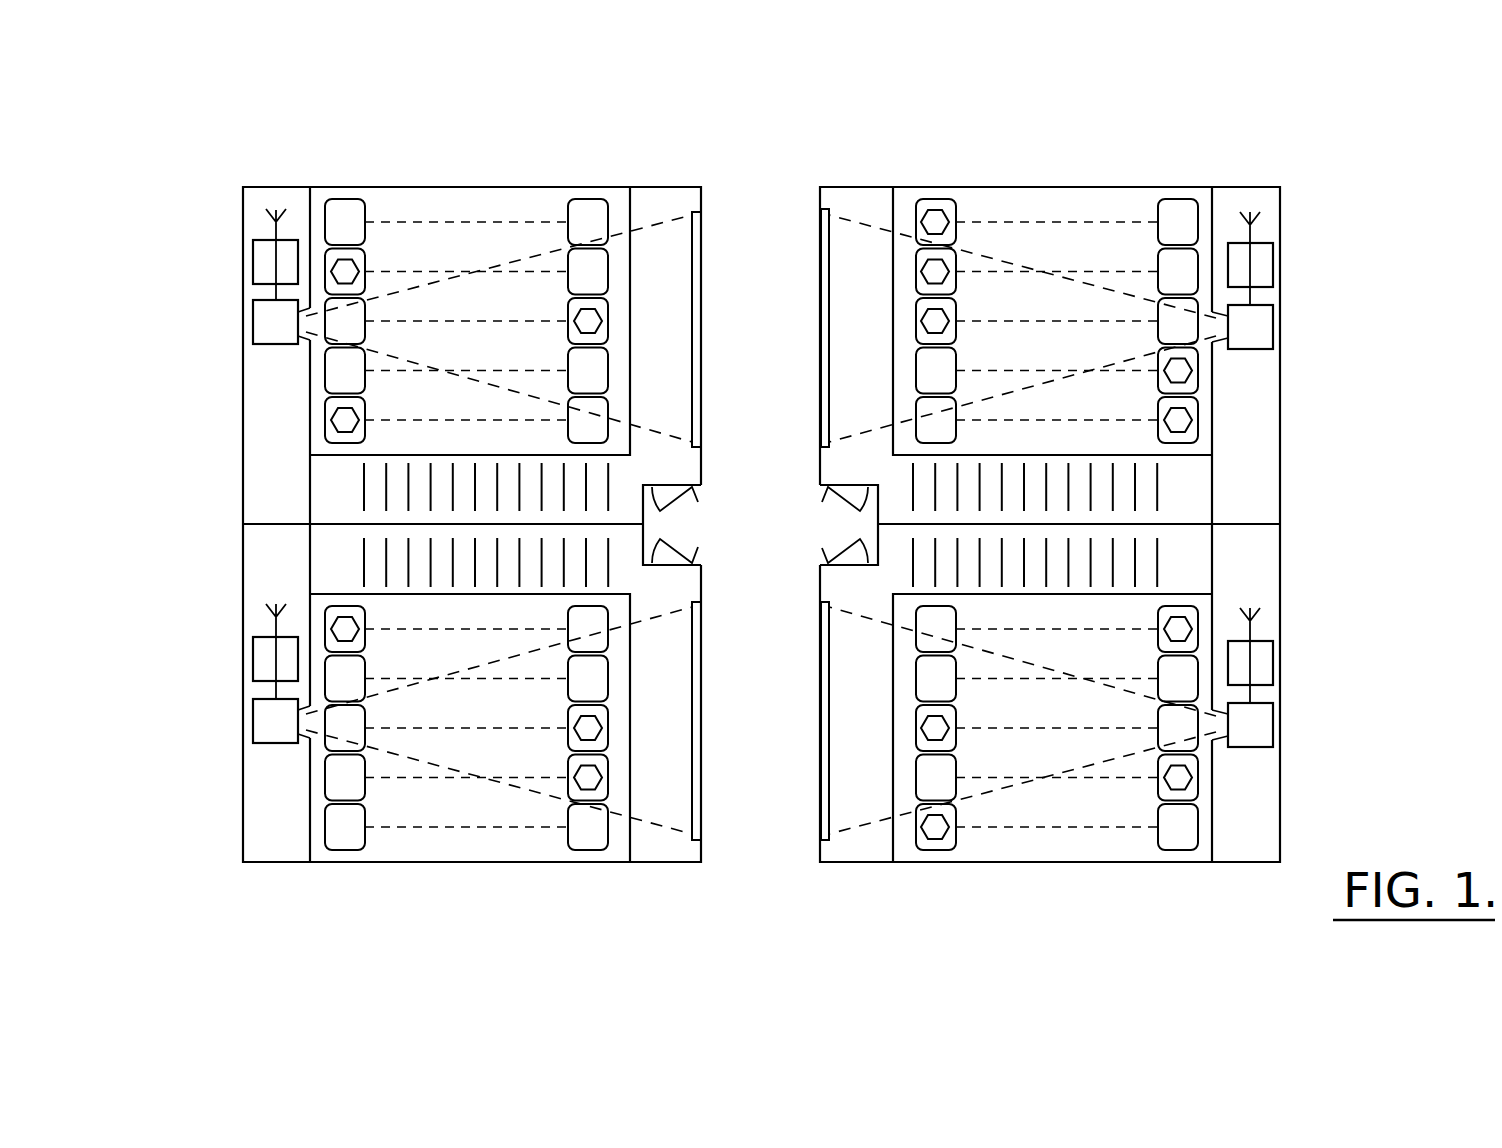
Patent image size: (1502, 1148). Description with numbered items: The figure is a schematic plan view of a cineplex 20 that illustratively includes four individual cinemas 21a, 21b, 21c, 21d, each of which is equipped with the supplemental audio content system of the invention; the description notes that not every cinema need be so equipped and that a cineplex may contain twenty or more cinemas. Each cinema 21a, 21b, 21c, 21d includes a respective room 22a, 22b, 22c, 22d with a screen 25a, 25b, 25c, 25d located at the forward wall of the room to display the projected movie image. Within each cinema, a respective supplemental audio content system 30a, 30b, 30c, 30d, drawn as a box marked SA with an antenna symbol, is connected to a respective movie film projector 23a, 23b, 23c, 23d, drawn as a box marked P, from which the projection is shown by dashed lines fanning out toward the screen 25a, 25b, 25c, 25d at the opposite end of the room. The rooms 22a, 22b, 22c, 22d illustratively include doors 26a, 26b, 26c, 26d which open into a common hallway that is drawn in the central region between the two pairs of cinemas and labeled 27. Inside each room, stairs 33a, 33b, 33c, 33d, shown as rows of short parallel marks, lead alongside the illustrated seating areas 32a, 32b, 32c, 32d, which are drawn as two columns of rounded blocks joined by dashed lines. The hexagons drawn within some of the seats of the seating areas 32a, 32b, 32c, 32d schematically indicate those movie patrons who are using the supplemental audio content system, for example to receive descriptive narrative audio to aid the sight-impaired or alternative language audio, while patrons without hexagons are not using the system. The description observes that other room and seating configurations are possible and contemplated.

The cineplex 20 is at (771, 517).
The cinema 21a is at (527, 185).
The cinema 21b is at (505, 864).
The cinema 21c is at (915, 186).
The cinema 21d is at (1021, 866).
The room 22a is at (425, 187).
The room 22b is at (390, 863).
The room 22c is at (1032, 187).
The room 22d is at (1153, 863).
The movie film projector 23a is at (257, 323).
The movie film projector 23b is at (258, 725).
The movie film projector 23c is at (1262, 330).
The movie film projector 23d is at (1265, 727).
The screen 25a is at (688, 247).
The screen 25b is at (692, 825).
The screen 25c is at (818, 257).
The screen 25d is at (820, 822).
The door 26a is at (698, 502).
The door 26b is at (698, 547).
The door 26c is at (822, 502).
The door 26d is at (822, 548).
The central passage 27 is at (779, 538).
The supplemental audio content system 30a is at (253, 263).
The supplemental audio content system 30b is at (253, 665).
The supplemental audio content system 30c is at (1273, 265).
The supplemental audio content system 30d is at (1273, 663).
The seating area 32a is at (478, 243).
The seating area 32b is at (424, 798).
The seating area 32c is at (1118, 243).
The seating area 32d is at (1082, 810).
The stairs 33a is at (372, 488).
The stairs 33b is at (350, 553).
The stairs 33c is at (1202, 498).
The stairs 33d is at (1198, 558).